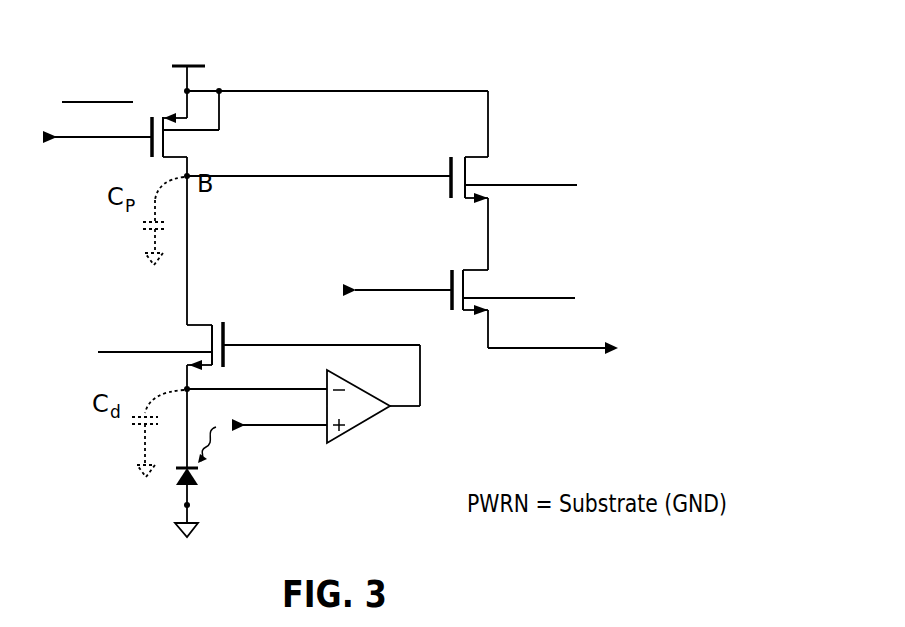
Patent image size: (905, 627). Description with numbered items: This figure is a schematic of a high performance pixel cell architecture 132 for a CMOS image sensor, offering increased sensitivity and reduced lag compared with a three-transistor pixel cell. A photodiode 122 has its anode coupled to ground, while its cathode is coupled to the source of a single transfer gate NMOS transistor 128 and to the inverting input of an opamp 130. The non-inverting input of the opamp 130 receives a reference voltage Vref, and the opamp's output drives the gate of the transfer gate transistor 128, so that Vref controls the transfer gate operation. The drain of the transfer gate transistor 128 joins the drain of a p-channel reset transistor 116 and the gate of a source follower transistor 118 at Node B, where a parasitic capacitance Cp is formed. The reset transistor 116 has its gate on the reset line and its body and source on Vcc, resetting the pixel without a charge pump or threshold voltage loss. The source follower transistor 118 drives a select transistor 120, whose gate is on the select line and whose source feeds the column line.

The reset transistor 116 is at (147, 148).
The source follower transistor 118 is at (467, 153).
The select transistor 120 is at (470, 266).
The photodiode 122 is at (200, 478).
The transfer gate transistor 128 is at (202, 320).
The opamp 130 is at (370, 424).
The pixel circuit 132 is at (546, 70).